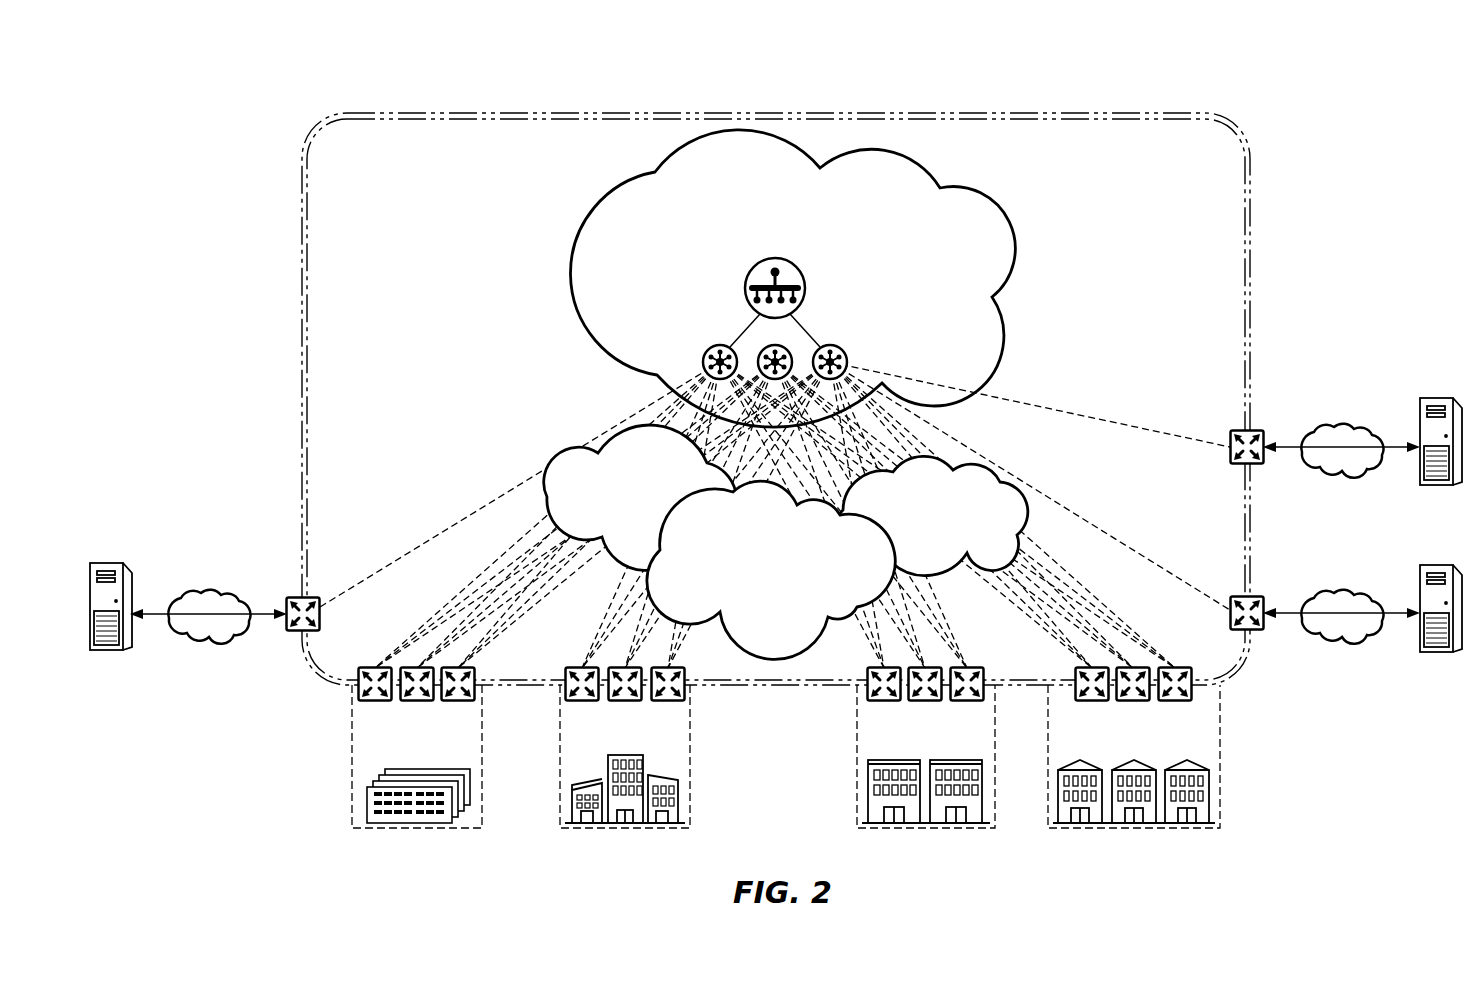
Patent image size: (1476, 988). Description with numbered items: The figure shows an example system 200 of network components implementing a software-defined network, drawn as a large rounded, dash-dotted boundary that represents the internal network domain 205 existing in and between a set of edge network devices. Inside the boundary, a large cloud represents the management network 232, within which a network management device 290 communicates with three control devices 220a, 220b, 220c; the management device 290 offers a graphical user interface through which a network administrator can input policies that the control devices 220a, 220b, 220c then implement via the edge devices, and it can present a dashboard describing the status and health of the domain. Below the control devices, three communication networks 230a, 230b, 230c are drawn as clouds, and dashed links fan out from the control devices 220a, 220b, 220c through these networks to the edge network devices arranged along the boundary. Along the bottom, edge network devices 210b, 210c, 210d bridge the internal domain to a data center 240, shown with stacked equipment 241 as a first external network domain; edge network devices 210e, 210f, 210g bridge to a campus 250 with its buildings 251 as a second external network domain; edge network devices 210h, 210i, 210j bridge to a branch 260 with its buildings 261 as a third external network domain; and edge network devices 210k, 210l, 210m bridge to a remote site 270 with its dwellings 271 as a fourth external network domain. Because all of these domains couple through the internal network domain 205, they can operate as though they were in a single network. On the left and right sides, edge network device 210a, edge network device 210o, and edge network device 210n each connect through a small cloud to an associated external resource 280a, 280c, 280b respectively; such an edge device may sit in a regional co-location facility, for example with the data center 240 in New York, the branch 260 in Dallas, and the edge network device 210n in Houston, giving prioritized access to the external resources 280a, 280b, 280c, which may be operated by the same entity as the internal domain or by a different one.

The system 200 is at (1247, 78).
The internal network domain 205 is at (1250, 175).
The management network 232 is at (975, 190).
The network management device 290 is at (806, 278).
The control device 220a is at (706, 352).
The control device 220b is at (765, 350).
The control device 220c is at (845, 352).
The communication network 230a is at (550, 480).
The communication network 230b is at (794, 588).
The communication network 230c is at (1025, 482).
The edge network device 210a is at (292, 598).
The edge network device 210b is at (358, 697).
The edge network device 210c is at (417, 701).
The edge network device 210d is at (476, 692).
The edge network device 210e is at (565, 698).
The edge network device 210f is at (625, 701).
The edge network device 210g is at (687, 698).
The edge network device 210h is at (866, 698).
The edge network device 210i is at (921, 701).
The edge network device 210j is at (970, 701).
The edge network device 210k is at (1083, 701).
The edge network device 210l is at (1145, 701).
The edge network device 210m is at (1192, 690).
The edge network device 210n is at (1258, 596).
The edge network device 210o is at (1258, 430).
The data center 240 is at (450, 828).
The server racks 241 is at (382, 828).
The campus 250 is at (657, 828).
The campus buildings 251 is at (592, 828).
The branch 260 is at (967, 828).
The office buildings 261 is at (902, 828).
The remote site 270 is at (1185, 828).
The residential buildings 271 is at (1122, 828).
The external resource 280a is at (110, 563).
The external resource 280b is at (1440, 564).
The external resource 280c is at (1440, 398).